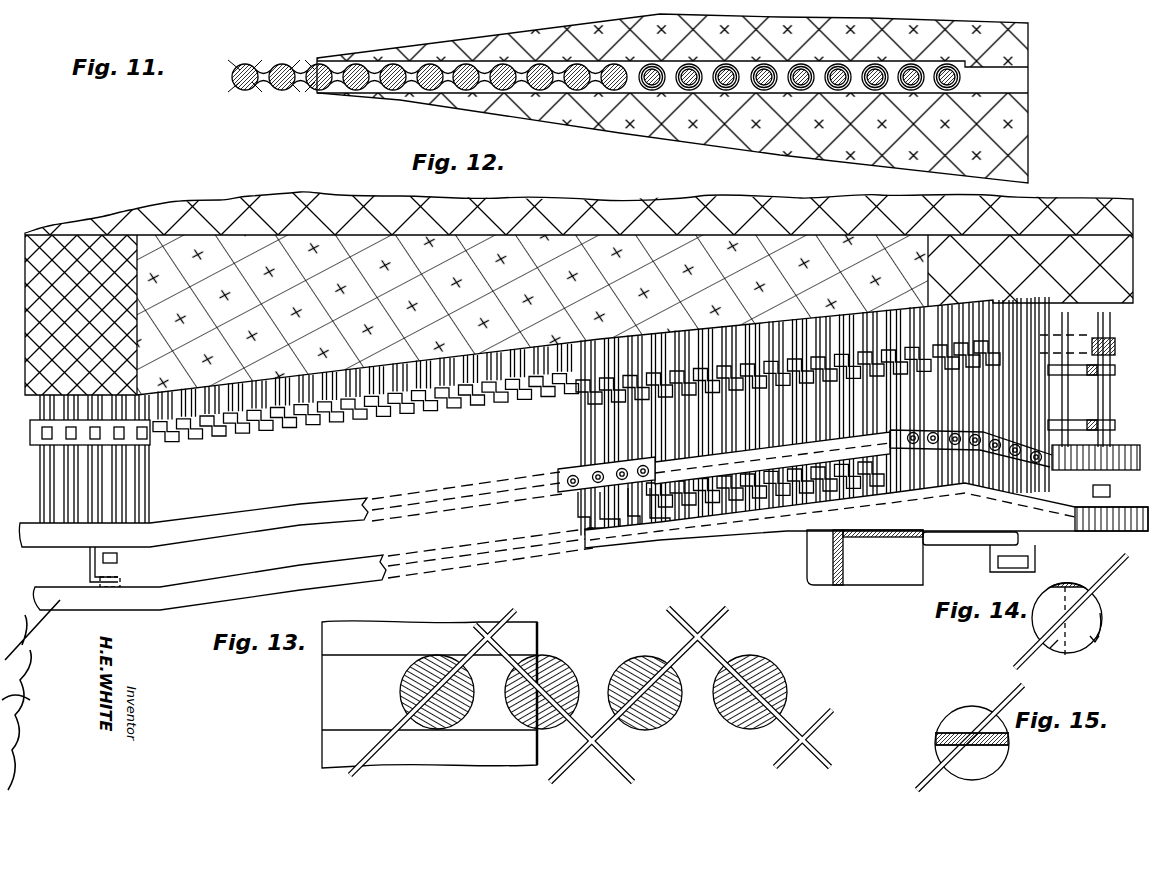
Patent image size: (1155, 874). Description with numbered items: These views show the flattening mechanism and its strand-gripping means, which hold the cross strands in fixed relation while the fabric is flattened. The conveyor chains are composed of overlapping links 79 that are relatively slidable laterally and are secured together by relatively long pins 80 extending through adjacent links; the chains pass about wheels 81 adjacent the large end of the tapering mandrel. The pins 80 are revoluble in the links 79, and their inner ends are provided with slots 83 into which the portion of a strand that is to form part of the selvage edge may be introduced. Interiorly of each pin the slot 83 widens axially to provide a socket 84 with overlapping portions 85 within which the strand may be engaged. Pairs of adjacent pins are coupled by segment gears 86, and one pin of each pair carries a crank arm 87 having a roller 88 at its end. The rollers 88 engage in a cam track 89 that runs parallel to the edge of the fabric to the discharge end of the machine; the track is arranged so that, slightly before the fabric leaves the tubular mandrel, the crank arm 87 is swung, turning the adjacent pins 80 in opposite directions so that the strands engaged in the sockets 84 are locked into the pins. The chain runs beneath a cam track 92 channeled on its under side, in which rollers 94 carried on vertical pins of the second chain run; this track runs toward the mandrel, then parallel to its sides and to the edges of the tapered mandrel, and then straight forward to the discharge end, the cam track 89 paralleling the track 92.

In FIG. 11, the overlapping links 79 is at (962, 87).
In FIG. 12, the overlapping links 79 is at (578, 388).
In FIG. 11, the pins 80 is at (312, 88).
In FIG. 12, the pins 80 is at (146, 486).
In FIG. 13, the pins 80 is at (622, 660).
In FIG. 14, the pins 80 is at (1093, 612).
In FIG. 12, the wheels 81 is at (1065, 378).
In FIG. 14, the slots 83 is at (1045, 628).
In FIG. 15, the slots 83 is at (995, 750).
In FIG. 13, the socket 84 is at (577, 695).
In FIG. 14, the socket 84 is at (1075, 592).
In FIG. 15, the socket 84 is at (975, 715).
In FIG. 14, the overlapping portions 85 is at (1058, 648).
In FIG. 12, the segment gears 86 is at (615, 500).
In FIG. 12, the crank arm 87 is at (585, 518).
In FIG. 12, the roller 88 is at (598, 540).
In FIG. 12, the cam track 89 is at (787, 525).
In FIG. 12, the cam track 92 is at (1133, 432).
In FIG. 12, the rollers 94 is at (948, 450).